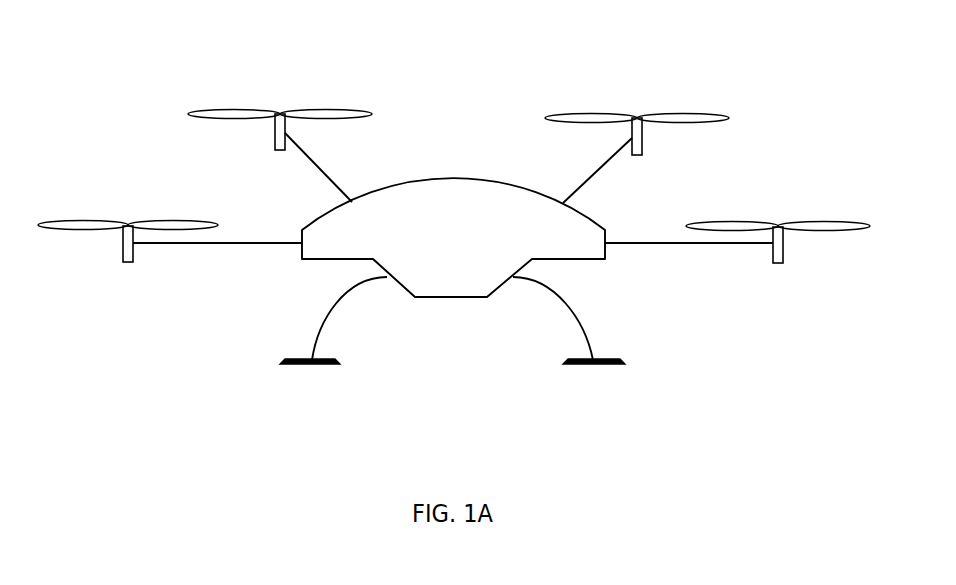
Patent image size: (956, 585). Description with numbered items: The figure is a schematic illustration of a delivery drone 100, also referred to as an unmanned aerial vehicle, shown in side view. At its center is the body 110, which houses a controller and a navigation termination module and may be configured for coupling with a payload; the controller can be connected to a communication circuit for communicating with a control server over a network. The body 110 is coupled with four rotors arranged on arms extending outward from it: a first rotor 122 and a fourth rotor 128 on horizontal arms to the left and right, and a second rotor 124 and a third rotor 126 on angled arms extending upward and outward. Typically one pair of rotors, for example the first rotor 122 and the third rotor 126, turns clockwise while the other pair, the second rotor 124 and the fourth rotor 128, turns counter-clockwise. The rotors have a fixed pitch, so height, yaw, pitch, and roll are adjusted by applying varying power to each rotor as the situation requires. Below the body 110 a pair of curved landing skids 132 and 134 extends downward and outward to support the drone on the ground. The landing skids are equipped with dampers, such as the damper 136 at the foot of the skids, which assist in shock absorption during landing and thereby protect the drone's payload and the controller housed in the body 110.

The delivery drone 100 is at (427, 60).
The body 110 is at (410, 178).
The first rotor 122 is at (123, 256).
The second rotor 124 is at (274, 141).
The third rotor 126 is at (643, 147).
The fourth rotor 128 is at (784, 253).
The landing skid 132 is at (333, 322).
The landing skid 134 is at (575, 322).
The damper 136 is at (282, 360).